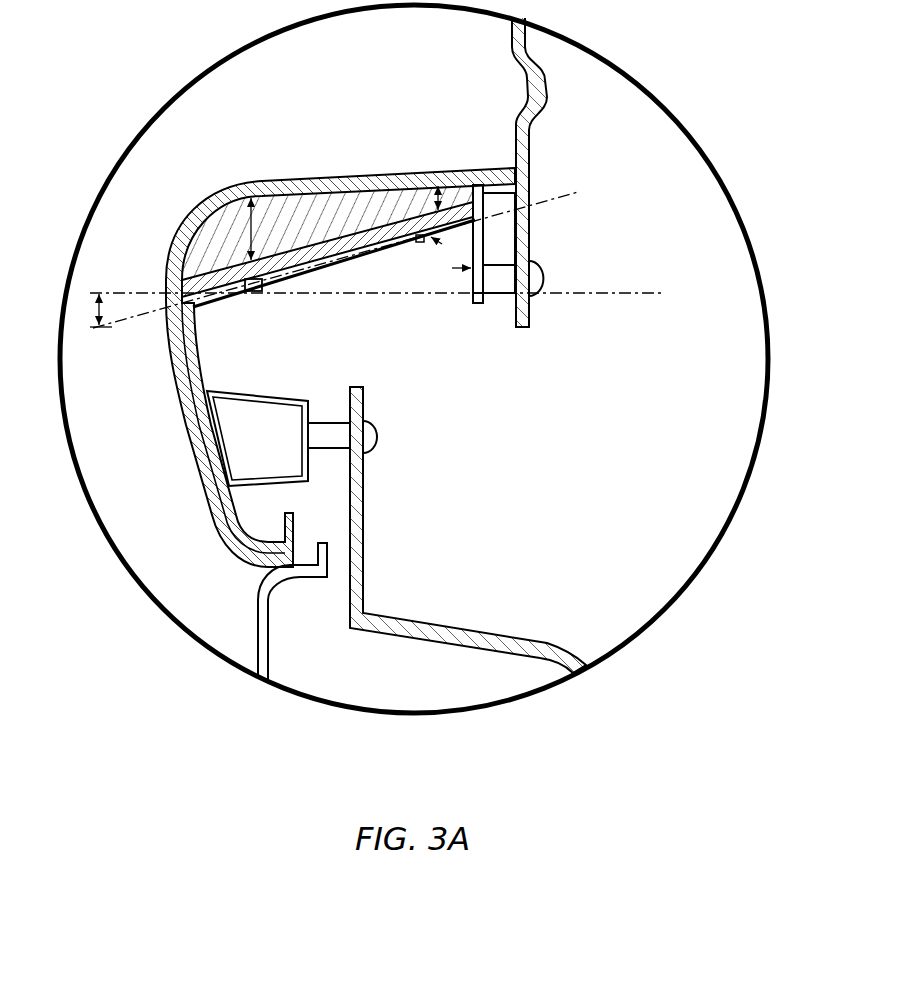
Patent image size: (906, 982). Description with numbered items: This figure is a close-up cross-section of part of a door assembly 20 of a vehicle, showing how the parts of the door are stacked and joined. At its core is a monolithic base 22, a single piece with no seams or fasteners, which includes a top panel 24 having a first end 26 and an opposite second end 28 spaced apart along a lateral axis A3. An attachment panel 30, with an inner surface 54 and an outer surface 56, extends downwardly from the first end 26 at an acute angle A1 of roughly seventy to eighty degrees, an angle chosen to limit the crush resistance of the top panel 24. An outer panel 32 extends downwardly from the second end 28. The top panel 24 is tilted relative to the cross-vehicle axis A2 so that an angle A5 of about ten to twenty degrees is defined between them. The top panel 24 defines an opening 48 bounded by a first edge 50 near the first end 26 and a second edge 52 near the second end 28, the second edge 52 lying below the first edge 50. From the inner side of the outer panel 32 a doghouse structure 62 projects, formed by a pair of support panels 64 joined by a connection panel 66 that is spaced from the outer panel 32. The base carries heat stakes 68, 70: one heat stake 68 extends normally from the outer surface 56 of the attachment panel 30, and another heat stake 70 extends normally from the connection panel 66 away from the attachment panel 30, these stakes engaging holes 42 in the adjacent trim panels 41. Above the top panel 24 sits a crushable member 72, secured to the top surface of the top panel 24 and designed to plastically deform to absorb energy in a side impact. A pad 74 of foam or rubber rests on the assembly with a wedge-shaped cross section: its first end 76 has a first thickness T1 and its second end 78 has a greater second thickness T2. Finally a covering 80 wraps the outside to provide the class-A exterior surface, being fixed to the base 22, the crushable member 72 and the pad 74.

The door assembly 20 is at (378, 100).
The monolithic base 22 is at (207, 373).
The top panel 24 is at (420, 243).
The first end 26 is at (476, 246).
The second end 28 is at (200, 308).
The attachment panel 30 is at (481, 300).
The outer panel 32 is at (200, 350).
The trim panel 41 is at (530, 177).
The hole 42 is at (530, 262).
The opening 48 is at (385, 262).
The first edge 50 is at (416, 236).
The second edge 52 is at (256, 290).
The inner surface 54 is at (474, 296).
The outer surface 56 is at (486, 262).
The doghouse structure 62 is at (235, 402).
The support panels 64 is at (279, 406).
The connection panel 66 is at (309, 462).
The heat stake 68 is at (500, 284).
The heat stake 70 is at (330, 425).
The crushable member 72 is at (337, 258).
The pad 74 is at (322, 216).
The first end 76 is at (457, 195).
The second end 78 is at (213, 252).
The covering 80 is at (268, 180).
The first thickness T1 is at (436, 192).
The second thickness T2 is at (248, 235).
The acute angle A1 is at (450, 252).
The cross-vehicle axis A2 is at (132, 291).
The lateral axis A3 is at (134, 318).
The angle A5 is at (93, 312).